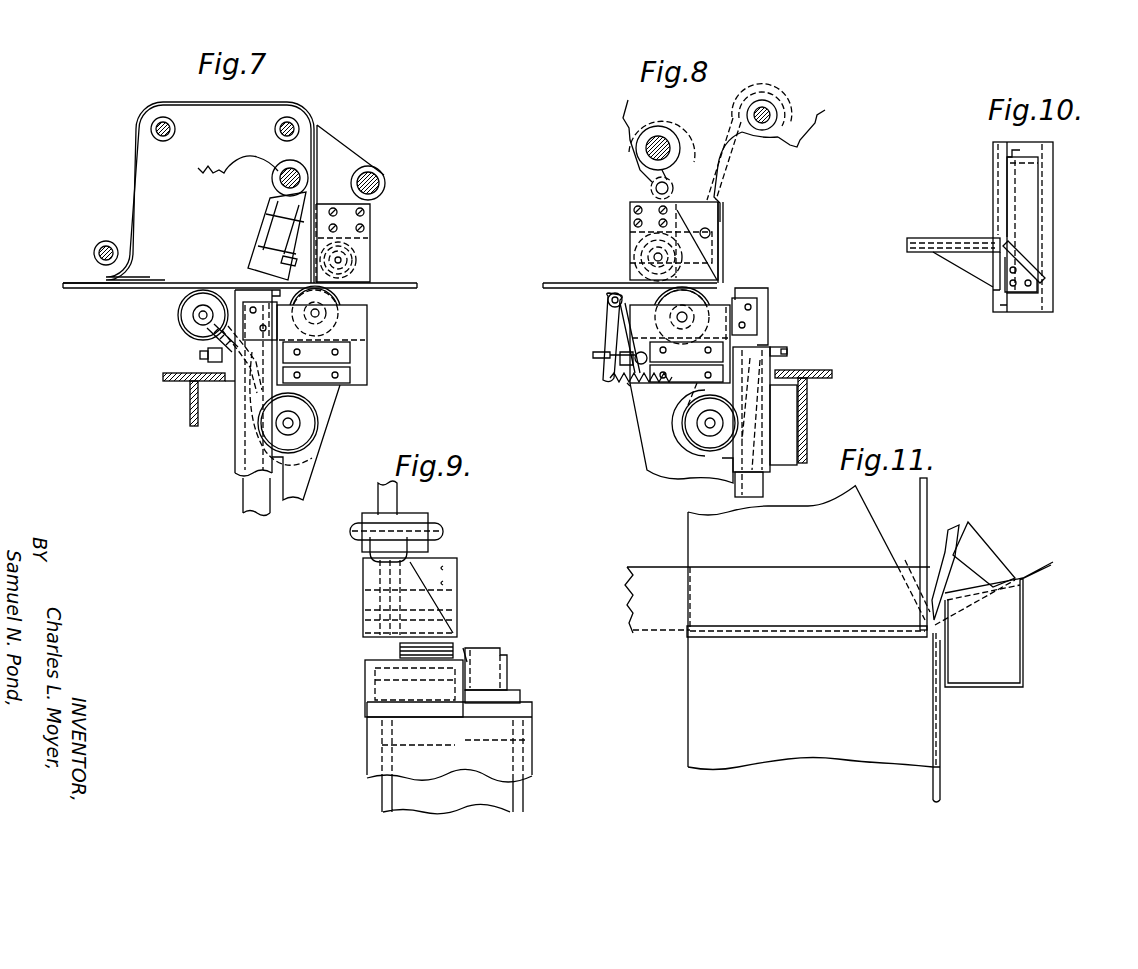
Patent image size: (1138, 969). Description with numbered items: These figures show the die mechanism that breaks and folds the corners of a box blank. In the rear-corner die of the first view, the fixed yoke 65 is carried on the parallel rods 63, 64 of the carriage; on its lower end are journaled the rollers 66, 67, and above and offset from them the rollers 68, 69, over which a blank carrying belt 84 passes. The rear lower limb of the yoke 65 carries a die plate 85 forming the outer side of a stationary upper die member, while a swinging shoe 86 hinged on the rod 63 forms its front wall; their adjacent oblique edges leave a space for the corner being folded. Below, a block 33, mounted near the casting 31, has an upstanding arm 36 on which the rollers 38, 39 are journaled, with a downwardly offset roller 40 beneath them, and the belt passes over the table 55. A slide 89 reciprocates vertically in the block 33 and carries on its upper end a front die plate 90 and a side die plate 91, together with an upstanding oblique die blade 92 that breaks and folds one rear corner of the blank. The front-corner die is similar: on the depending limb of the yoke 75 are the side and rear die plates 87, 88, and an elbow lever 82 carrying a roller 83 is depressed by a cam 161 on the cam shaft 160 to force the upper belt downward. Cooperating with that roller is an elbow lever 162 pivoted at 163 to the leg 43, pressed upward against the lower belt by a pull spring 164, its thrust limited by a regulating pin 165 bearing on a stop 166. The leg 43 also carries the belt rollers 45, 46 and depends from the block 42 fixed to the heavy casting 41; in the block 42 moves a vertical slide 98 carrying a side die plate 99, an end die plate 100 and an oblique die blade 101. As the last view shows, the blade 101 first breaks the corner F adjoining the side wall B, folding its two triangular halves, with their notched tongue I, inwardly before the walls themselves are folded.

In FIG. 7, the roller 68 is at (191, 84).
In FIG. 7, the roller 69 is at (271, 105).
In FIG. 7, the yoke 65 is at (347, 158).
In FIG. 7, the rod 64 is at (385, 184).
In FIG. 7, the rod 63 is at (281, 178).
In FIG. 9, the rod 63 is at (441, 524).
In FIG. 7, the roller 66 is at (98, 229).
In FIG. 7, the belt 84 is at (138, 208).
In FIG. 8, the belt 84 is at (575, 284).
In FIG. 7, the swinging shoe 86 is at (264, 226).
In FIG. 9, the swinging shoe 86 is at (367, 589).
In FIG. 7, the roller 67 is at (355, 254).
In FIG. 7, the die plate 85 is at (361, 268).
In FIG. 9, the die plate 85 is at (460, 601).
In FIG. 7, the die blade 92 is at (232, 298).
In FIG. 9, the die blade 92 is at (498, 649).
In FIG. 7, the table plate 55 is at (125, 289).
In FIG. 7, the roller 38 is at (179, 308).
In FIG. 7, the roller 39 is at (338, 296).
In FIG. 9, the roller 39 is at (400, 651).
In FIG. 7, the side die plate 91 is at (361, 326).
In FIG. 9, the side die plate 91 is at (467, 660).
In FIG. 7, the upstanding arm 36 is at (198, 345).
In FIG. 7, the casting 31 is at (190, 408).
In FIG. 7, the block 33 is at (242, 424).
In FIG. 7, the roller 40 is at (307, 426).
In FIG. 7, the slide 89 is at (253, 498).
In FIG. 9, the slide 89 is at (505, 799).
In FIG. 8, the cam 161 is at (630, 141).
In FIG. 8, the cam shaft 160 is at (647, 156).
In FIG. 8, the yoke 75 is at (706, 145).
In FIG. 8, the elbow lever 82 is at (721, 184).
In FIG. 8, the rear die plate 88 is at (724, 224).
In FIG. 11, the rear die plate 88 is at (928, 488).
In FIG. 8, the side die plate 87 is at (640, 238).
In FIG. 11, the side die plate 87 is at (860, 524).
In FIG. 8, the roller 83 is at (640, 259).
In FIG. 8, the die blade 101 is at (760, 281).
In FIG. 10, the die blade 101 is at (1027, 259).
In FIG. 11, the die blade 101 is at (993, 586).
In FIG. 8, the pivot 163 is at (608, 300).
In FIG. 8, the belt roller 45 is at (697, 296).
In FIG. 8, the elbow lever 162 is at (608, 316).
In FIG. 8, the side die plate 99 is at (630, 319).
In FIG. 10, the side die plate 99 is at (940, 240).
In FIG. 11, the side die plate 99 is at (813, 643).
In FIG. 8, the regulating pin 165 is at (597, 359).
In FIG. 8, the pull spring 164 is at (628, 381).
In FIG. 8, the stop 166 is at (641, 386).
In FIG. 8, the leg 43 is at (645, 424).
In FIG. 8, the belt roller 46 is at (700, 436).
In FIG. 8, the block 42 is at (752, 428).
In FIG. 10, the block 42 is at (1047, 294).
In FIG. 8, the casting 41 is at (807, 444).
In FIG. 8, the slide 98 is at (750, 486).
In FIG. 10, the slide 98 is at (1025, 216).
In FIG. 10, the end die plate 100 is at (1000, 186).
In FIG. 11, the end die plate 100 is at (942, 781).
In FIG. 9, the front die plate 90 is at (368, 678).
In FIG. 11, the tongue I is at (953, 530).
In FIG. 11, the corner F is at (972, 562).
In FIG. 11, the side wall B is at (777, 600).